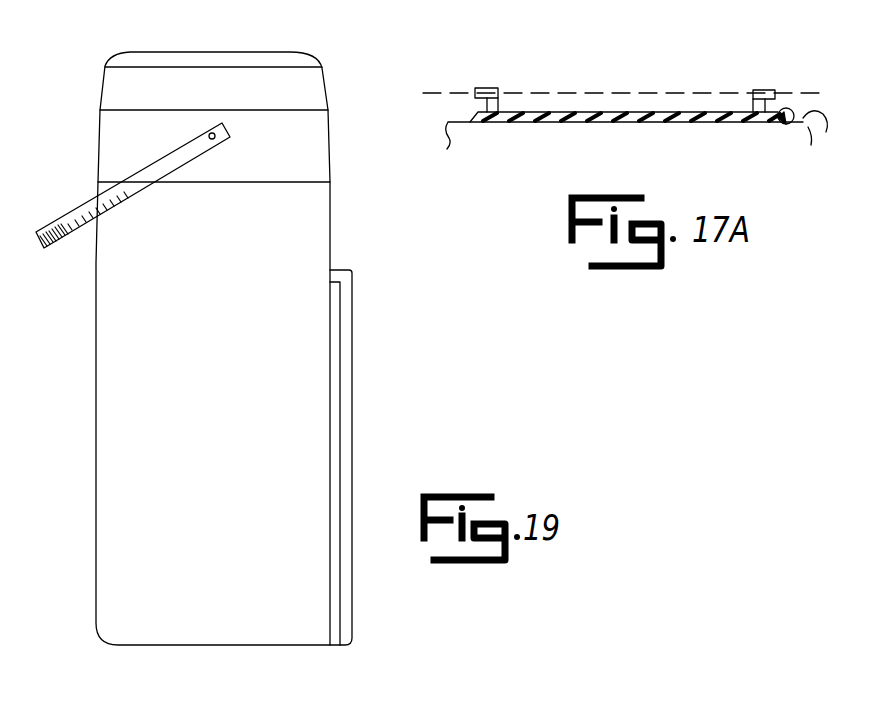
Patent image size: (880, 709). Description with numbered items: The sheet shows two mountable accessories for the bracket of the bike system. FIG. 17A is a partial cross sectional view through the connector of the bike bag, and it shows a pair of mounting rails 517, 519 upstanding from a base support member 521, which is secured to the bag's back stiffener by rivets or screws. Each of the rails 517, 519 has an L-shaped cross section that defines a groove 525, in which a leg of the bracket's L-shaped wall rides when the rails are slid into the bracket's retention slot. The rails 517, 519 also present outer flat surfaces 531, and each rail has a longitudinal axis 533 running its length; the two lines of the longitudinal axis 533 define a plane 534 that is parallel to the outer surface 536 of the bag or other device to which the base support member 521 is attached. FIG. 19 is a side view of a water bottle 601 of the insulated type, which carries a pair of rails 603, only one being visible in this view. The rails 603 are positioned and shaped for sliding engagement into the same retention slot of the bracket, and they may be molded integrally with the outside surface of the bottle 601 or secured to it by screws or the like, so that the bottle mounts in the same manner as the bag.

In FIG. 17A, the mounting rail 517 is at (486, 91).
In FIG. 17A, the mounting rail 519 is at (756, 94).
In FIG. 17A, the base support member 521 is at (788, 121).
In FIG. 17A, the groove 525 is at (478, 102).
In FIG. 17A, the outer flat surface 531 is at (492, 86).
In FIG. 17A, the longitudinal axis 533 is at (488, 88).
In FIG. 17A, the plane 534 is at (819, 94).
In FIG. 17A, the outer surface 536 is at (826, 132).
In FIG. 19, the water bottle 601 is at (307, 237).
In FIG. 19, the rail 603 is at (348, 433).